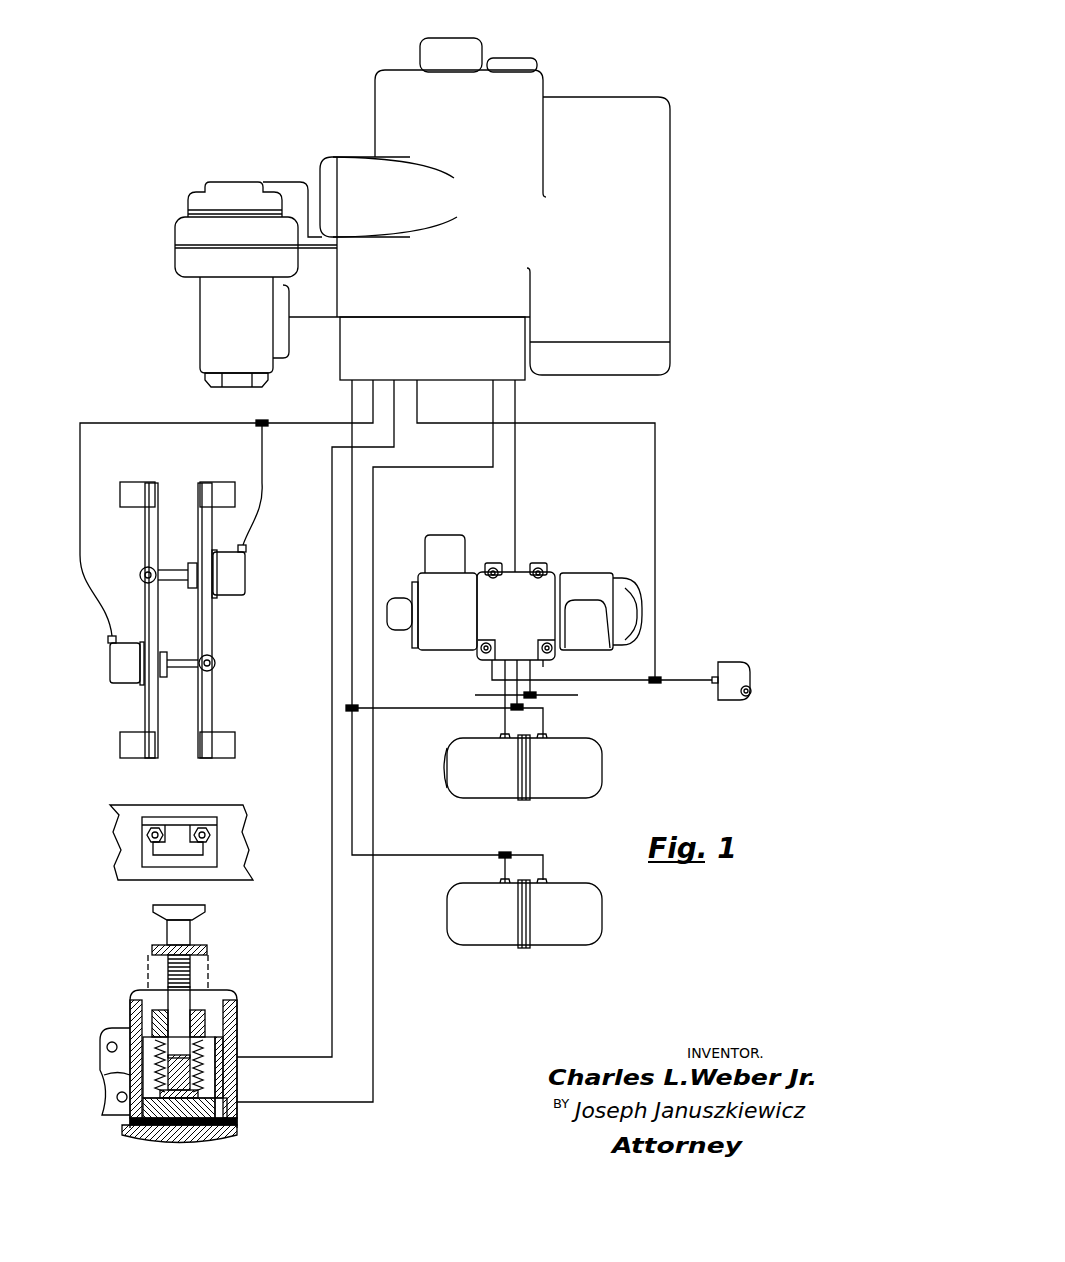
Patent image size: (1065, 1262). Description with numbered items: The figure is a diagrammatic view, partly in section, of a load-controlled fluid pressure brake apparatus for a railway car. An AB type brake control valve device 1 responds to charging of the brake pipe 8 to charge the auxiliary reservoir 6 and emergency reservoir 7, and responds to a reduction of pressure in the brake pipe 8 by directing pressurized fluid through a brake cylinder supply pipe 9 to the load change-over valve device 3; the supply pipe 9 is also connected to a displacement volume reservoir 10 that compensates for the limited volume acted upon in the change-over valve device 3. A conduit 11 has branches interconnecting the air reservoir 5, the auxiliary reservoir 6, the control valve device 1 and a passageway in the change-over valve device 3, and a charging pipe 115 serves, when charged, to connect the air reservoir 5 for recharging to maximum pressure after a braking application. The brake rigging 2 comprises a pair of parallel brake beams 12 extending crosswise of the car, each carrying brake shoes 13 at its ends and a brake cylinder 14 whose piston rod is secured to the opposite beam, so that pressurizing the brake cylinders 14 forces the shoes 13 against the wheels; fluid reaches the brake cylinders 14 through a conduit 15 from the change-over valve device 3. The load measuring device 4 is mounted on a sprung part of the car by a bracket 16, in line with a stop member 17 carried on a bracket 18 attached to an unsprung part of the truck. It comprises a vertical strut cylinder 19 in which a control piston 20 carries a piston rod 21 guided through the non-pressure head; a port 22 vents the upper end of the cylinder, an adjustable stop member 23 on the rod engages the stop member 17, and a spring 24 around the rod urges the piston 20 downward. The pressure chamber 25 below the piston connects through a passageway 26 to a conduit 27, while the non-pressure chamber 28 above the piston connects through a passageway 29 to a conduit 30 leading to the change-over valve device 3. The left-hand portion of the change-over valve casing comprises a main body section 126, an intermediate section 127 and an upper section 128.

The AB type brake control valve device 1 is at (620, 556).
The air brake rigging 2 is at (213, 628).
The load change-over valve device 3 is at (537, 216).
The load measuring device 4 is at (208, 1007).
The air reservoir 5 is at (578, 883).
The auxiliary reservoir 6 is at (598, 770).
The emergency reservoir 7 is at (453, 768).
The brake pipe 8 is at (578, 695).
The brake cylinder supply pipe 9 is at (417, 403).
The displacement volume reservoir 10 is at (745, 666).
The conduit 11 is at (352, 400).
The brake beams 12 is at (206, 613).
The brake shoes 13 is at (227, 494).
The brake cylinders 14 is at (245, 577).
The conduit 15 is at (322, 427).
The bracket 16 is at (110, 1058).
The stop member 17 is at (198, 853).
The bracket 18 is at (144, 844).
The strut cylinder 19 is at (137, 1070).
The control piston 20 is at (225, 1117).
The piston rod 21 is at (184, 994).
The port 22 is at (152, 1015).
The stop member 23 is at (198, 952).
The spring 24 is at (200, 1030).
The pressure chamber 25 is at (132, 1132).
The passageway 26 is at (227, 1098).
The conduit 27 is at (493, 398).
The non-pressure chamber 28 is at (142, 1038).
The passageway 29 is at (225, 1057).
The conduit 30 is at (394, 443).
The charging pipe 115 is at (515, 410).
The main body section 126 is at (207, 322).
The intermediate section 127 is at (180, 231).
The upper section 128 is at (193, 203).